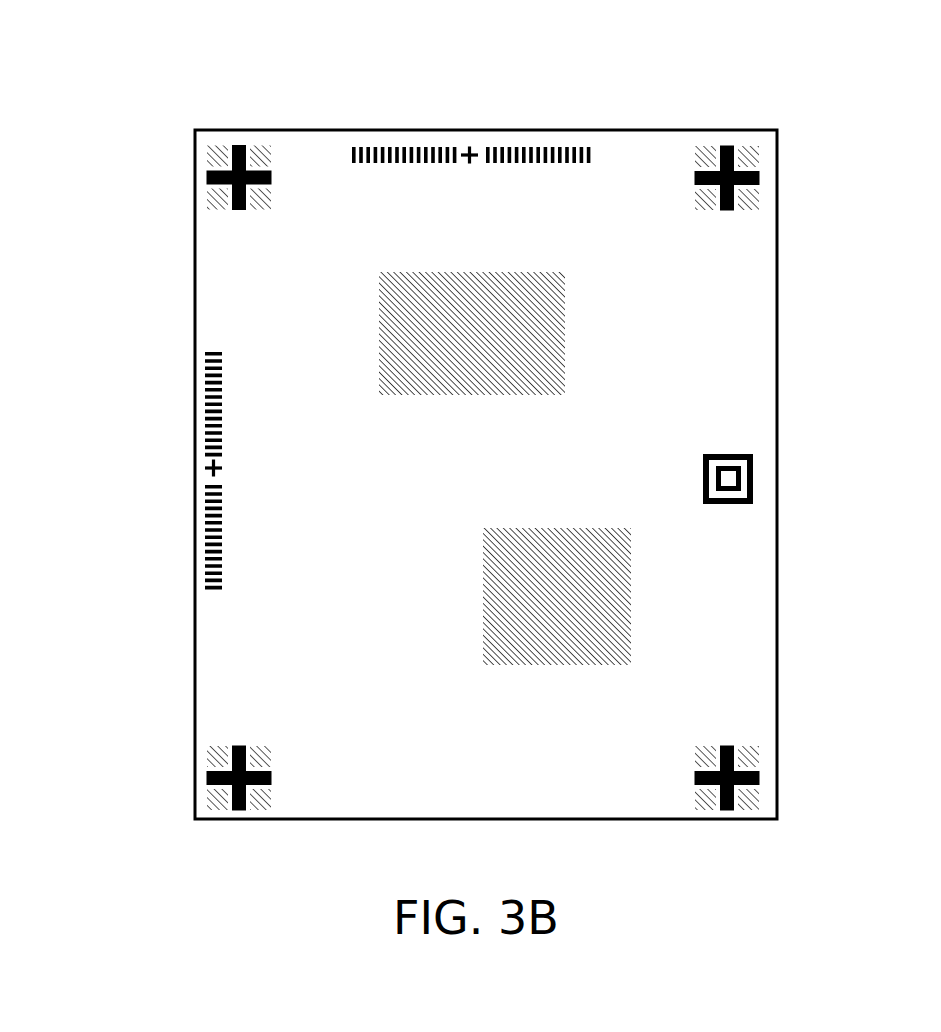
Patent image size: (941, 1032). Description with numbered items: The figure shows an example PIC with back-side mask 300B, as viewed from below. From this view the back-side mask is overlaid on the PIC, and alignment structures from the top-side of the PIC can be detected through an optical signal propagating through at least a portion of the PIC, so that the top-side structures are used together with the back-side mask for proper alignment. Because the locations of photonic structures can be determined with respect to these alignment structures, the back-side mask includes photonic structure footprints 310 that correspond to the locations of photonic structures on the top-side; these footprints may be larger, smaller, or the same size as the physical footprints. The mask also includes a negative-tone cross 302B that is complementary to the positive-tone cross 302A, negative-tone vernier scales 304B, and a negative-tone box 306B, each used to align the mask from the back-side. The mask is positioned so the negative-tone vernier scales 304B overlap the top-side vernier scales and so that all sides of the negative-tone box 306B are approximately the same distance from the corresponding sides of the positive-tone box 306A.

The PIC with back-side mask 300B is at (486, 417).
The positive-tone cross 302A is at (237, 745).
The negative-tone cross 302B is at (207, 797).
The negative-tone vernier scales 304B is at (183, 515).
The positive-tone box 306A is at (742, 479).
The negative-tone box 306B is at (753, 455).
The photonic structure footprints 310 is at (567, 308).